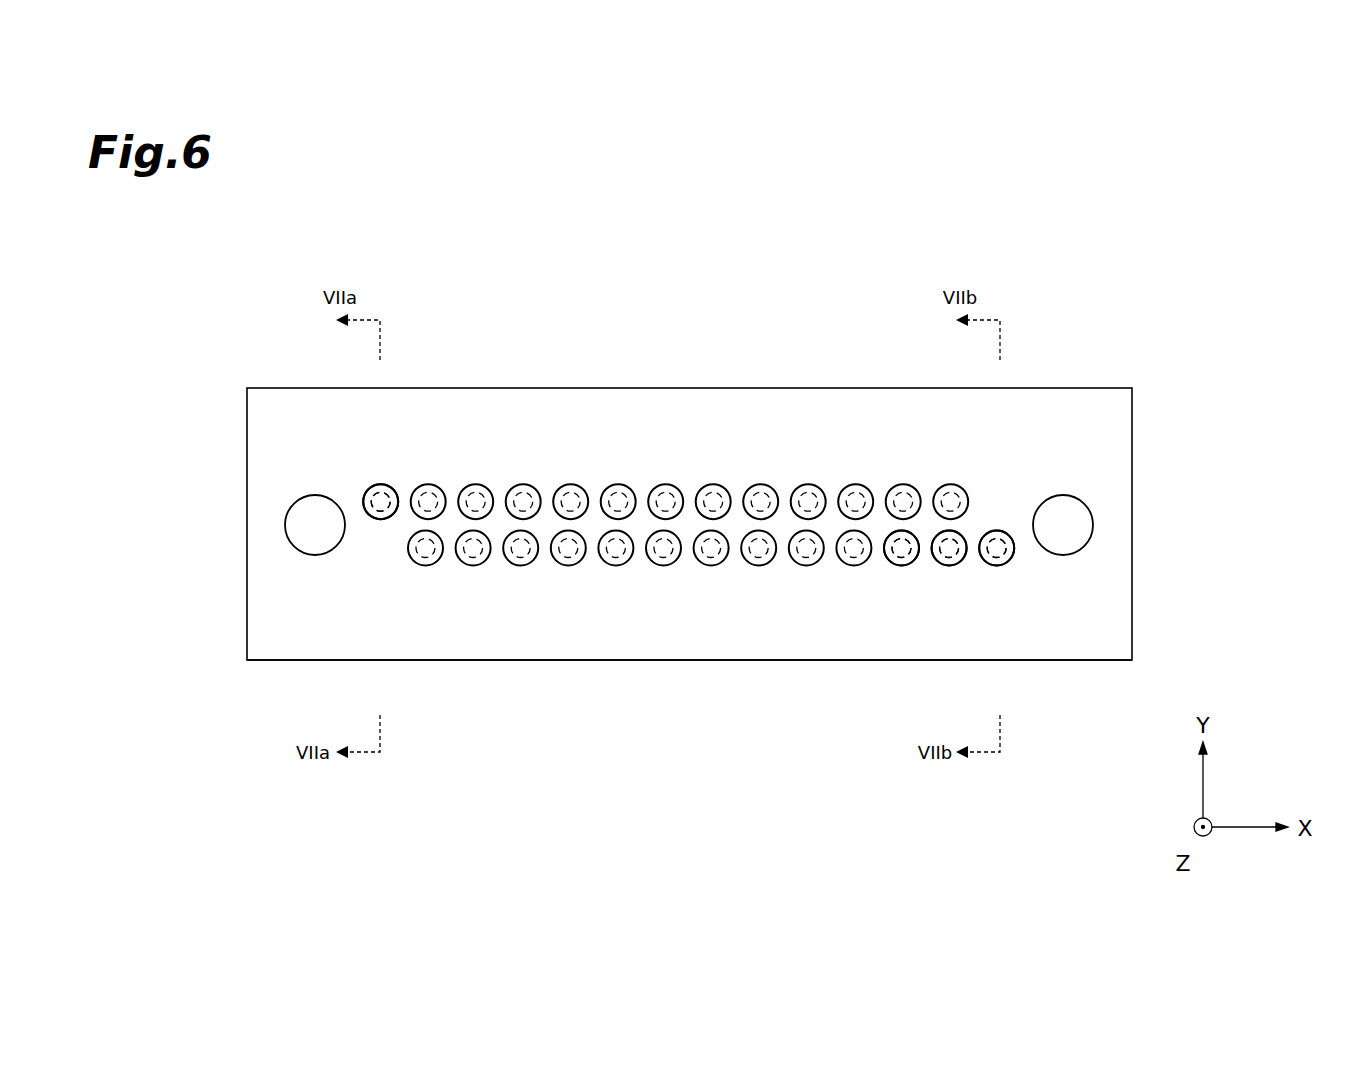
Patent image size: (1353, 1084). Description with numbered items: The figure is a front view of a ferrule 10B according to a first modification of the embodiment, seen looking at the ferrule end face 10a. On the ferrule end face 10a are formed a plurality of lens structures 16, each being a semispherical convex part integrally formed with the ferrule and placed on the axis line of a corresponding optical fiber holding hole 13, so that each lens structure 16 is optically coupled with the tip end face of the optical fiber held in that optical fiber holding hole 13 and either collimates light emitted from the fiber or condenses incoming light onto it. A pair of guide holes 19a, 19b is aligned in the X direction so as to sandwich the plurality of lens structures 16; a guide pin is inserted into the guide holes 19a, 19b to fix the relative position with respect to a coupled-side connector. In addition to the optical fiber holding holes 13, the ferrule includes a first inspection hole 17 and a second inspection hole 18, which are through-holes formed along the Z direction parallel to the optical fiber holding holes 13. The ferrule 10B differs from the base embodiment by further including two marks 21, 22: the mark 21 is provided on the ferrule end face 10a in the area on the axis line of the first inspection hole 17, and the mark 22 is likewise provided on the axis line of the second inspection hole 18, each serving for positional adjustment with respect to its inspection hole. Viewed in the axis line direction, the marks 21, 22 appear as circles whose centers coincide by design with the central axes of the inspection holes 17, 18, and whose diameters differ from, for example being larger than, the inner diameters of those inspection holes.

The ferrule 10B is at (1085, 265).
The ferrule end face 10a is at (640, 636).
The optical fiber holding hole 13 is at (958, 532).
The lens structure 16 is at (954, 565).
The first inspection hole 17 is at (386, 486).
The second inspection hole 18 is at (993, 566).
The guide hole 19a is at (298, 548).
The guide hole 19b is at (1066, 548).
The mark 21 is at (371, 493).
The mark 22 is at (1006, 564).